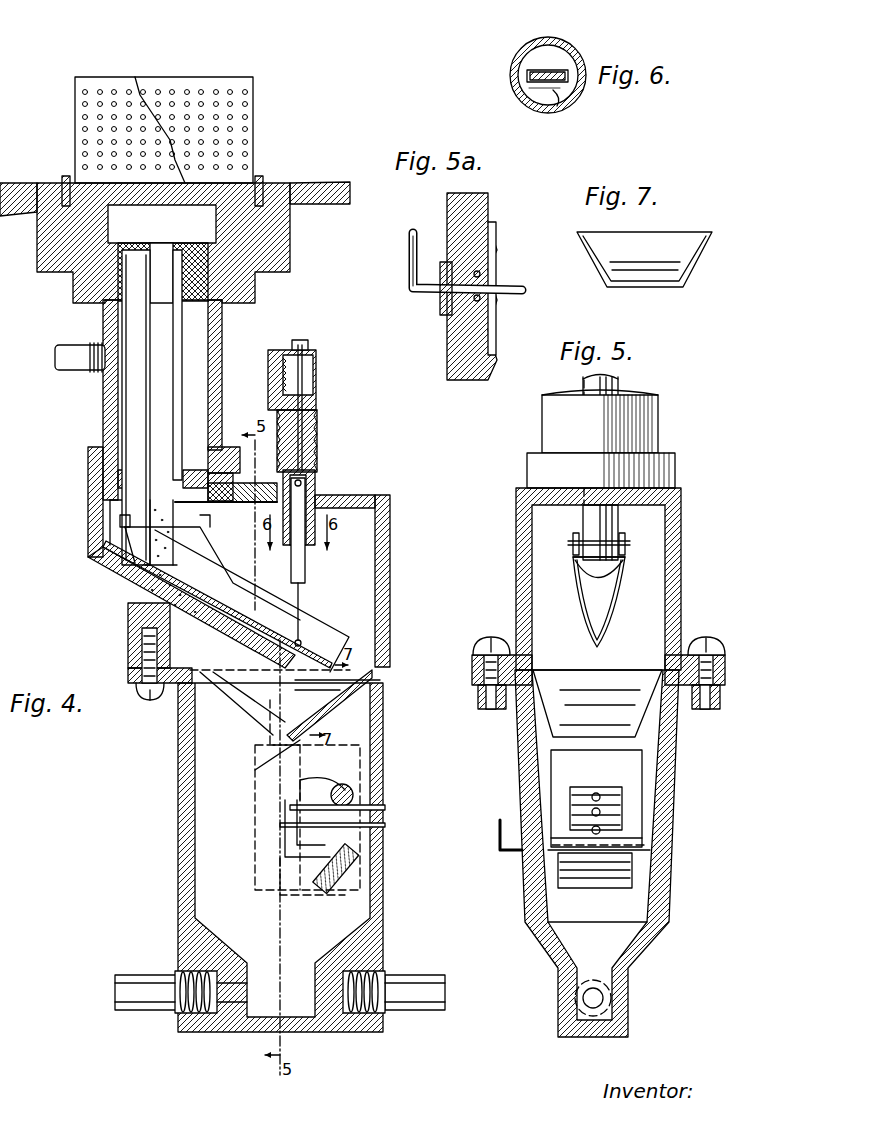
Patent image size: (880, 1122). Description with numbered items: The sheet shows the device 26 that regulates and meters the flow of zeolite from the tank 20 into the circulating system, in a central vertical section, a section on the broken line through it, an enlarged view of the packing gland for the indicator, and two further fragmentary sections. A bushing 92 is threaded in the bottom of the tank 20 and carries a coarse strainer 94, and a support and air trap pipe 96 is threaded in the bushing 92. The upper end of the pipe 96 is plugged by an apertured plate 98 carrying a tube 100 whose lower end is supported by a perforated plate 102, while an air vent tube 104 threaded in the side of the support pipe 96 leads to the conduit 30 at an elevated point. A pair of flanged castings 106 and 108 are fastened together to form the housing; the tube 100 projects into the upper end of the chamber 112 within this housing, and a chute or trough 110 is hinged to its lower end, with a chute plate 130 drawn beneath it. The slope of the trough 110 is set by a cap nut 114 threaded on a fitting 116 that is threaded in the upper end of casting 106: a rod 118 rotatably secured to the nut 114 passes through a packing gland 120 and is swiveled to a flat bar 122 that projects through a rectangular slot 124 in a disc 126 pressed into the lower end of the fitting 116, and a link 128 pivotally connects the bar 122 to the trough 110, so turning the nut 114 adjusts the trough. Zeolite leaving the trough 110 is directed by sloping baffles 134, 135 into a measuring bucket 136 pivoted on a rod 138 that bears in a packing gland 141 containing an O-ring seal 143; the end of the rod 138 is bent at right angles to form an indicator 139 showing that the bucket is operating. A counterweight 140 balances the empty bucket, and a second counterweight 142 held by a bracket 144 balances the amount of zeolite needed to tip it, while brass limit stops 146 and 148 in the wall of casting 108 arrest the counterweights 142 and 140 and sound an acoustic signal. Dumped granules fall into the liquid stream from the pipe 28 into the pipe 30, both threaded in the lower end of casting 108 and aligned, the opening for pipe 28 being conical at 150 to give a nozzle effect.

In FIG. 4, the tank 20 is at (345, 182).
In FIG. 4, the regulating and metering device 26 is at (82, 525).
In FIG. 5, the regulating and metering device 26 is at (683, 487).
In FIG. 4, the pipe 28 is at (165, 1010).
In FIG. 5, the pipe 28 is at (600, 1000).
In FIG. 4, the conduit 30 is at (420, 1012).
In FIG. 4, the bushing 92 is at (292, 245).
In FIG. 4, the coarse strainer 94 is at (235, 135).
In FIG. 4, the support and air trap pipe 96 is at (225, 325).
In FIG. 5, the support and air trap pipe 96 is at (650, 440).
In FIG. 4, the apertured plate 98 is at (163, 258).
In FIG. 4, the tube 100 is at (122, 398).
In FIG. 5, the tube 100 is at (612, 383).
In FIG. 4, the perforated plate 102 is at (228, 455).
In FIG. 4, the air vent tube 104 is at (74, 345).
In FIG. 4, the flanged casting 106 is at (132, 632).
In FIG. 4, the flanged casting 108 is at (178, 775).
In FIG. 5, the flanged casting 108 is at (665, 890).
In FIG. 4, the chute or trough 110 is at (195, 555).
In FIG. 5, the chute or trough 110 is at (615, 585).
In FIG. 4, the chamber 112 is at (372, 512).
In FIG. 4, the cap nut 114 is at (325, 370).
In FIG. 4, the fitting 116 is at (318, 490).
In FIG. 6, the fitting 116 is at (530, 115).
In FIG. 4, the rod 118 is at (305, 380).
In FIG. 4, the packing gland 120 is at (318, 440).
In FIG. 4, the flat bar 122 is at (300, 575).
In FIG. 6, the flat bar 122 is at (555, 70).
In FIG. 6, the rectangular slot 124 is at (530, 92).
In FIG. 4, the disc 126 is at (304, 555).
In FIG. 6, the disc 126 is at (560, 100).
In FIG. 4, the link 128 is at (300, 605).
In FIG. 4, the chute plate 130 is at (212, 610).
In FIG. 5, the chute plate 130 is at (600, 612).
In FIG. 4, the sloping baffle 134 is at (310, 700).
In FIG. 7, the sloping baffle 134 is at (690, 255).
In FIG. 4, the sloping baffle 135 is at (220, 700).
In FIG. 5, the sloping baffle 135 is at (640, 715).
In FIG. 4, the measuring bucket 136 is at (258, 862).
In FIG. 5, the measuring bucket 136 is at (615, 775).
In FIG. 4, the rod 138 is at (300, 865).
In FIG. 5, the rod 138 is at (640, 858).
In FIG. 5A, the rod 138 is at (500, 268).
In FIG. 5, the indicator 139 is at (495, 835).
In FIG. 5A, the indicator 139 is at (410, 268).
In FIG. 4, the counterweight 140 is at (355, 880).
In FIG. 5, the counterweight 140 is at (605, 888).
In FIG. 5A, the packing gland 141 is at (440, 305).
In FIG. 4, the second counterweight 142 is at (353, 795).
In FIG. 5, the second counterweight 142 is at (600, 797).
In FIG. 5A, the O-ring seal 143 is at (480, 300).
In FIG. 4, the bracket 144 is at (345, 785).
In FIG. 5, the bracket 144 is at (570, 810).
In FIG. 4, the limit stop 146 is at (385, 808).
In FIG. 5, the limit stop 146 is at (600, 812).
In FIG. 4, the limit stop 148 is at (385, 825).
In FIG. 5, the limit stop 148 is at (600, 830).
In FIG. 4, the conical opening 150 is at (235, 1000).